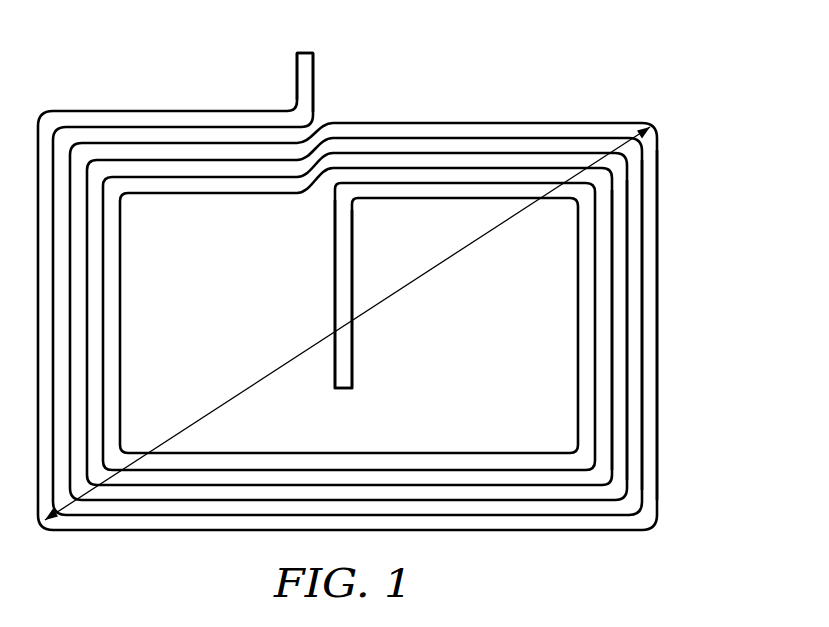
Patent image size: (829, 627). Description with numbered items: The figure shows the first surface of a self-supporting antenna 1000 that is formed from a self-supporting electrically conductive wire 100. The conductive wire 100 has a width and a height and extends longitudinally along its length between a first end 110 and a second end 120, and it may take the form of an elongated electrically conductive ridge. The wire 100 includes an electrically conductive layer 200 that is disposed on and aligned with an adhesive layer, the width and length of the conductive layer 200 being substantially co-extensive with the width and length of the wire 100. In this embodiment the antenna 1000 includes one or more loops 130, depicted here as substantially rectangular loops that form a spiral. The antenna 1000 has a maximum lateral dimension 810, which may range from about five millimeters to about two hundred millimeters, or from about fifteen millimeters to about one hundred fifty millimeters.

The self-supporting antenna 1000 is at (389, 267).
The self-supporting electrically conductive wire 100 is at (580, 133).
The first end 110 is at (302, 52).
The second end 120 is at (342, 389).
The electrically conductive layer 200 is at (650, 260).
The loops 130 is at (618, 400).
The maximum lateral dimension 810 is at (220, 402).